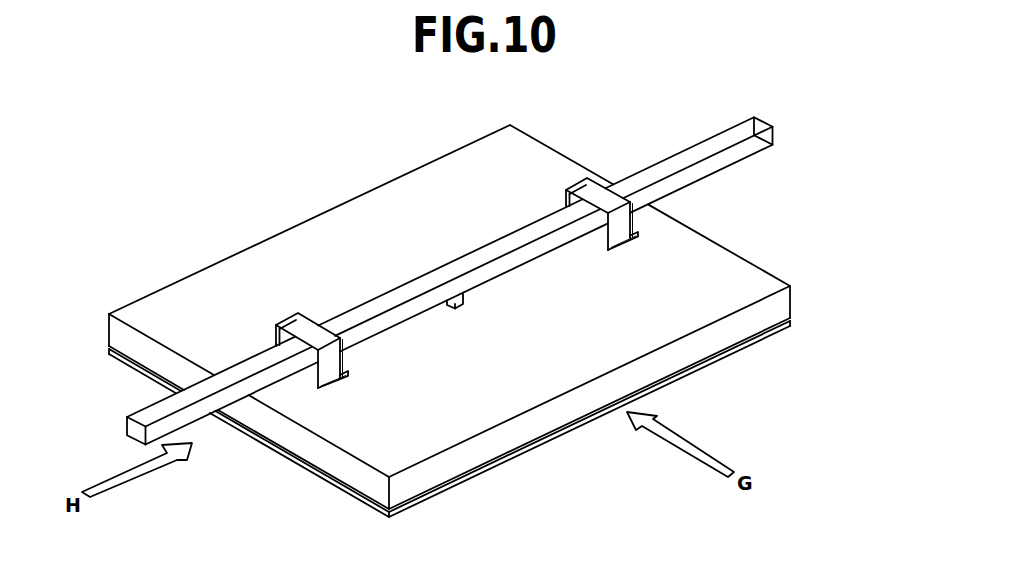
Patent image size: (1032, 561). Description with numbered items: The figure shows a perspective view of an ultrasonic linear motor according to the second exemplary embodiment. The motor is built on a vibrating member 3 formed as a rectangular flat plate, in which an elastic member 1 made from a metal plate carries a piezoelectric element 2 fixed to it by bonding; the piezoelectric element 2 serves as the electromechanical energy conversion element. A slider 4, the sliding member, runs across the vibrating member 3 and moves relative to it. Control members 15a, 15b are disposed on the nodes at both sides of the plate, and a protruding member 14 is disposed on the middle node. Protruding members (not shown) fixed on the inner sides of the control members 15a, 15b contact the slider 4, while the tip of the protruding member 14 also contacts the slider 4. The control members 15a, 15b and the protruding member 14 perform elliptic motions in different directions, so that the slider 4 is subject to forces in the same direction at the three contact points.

The elastic member 1 is at (757, 281).
The piezoelectric element 2 is at (772, 334).
The vibrating member 3 is at (498, 321).
The slider 4 is at (695, 153).
The protruding member 14 is at (456, 307).
The control member 15a is at (333, 389).
The control member 15b is at (632, 247).